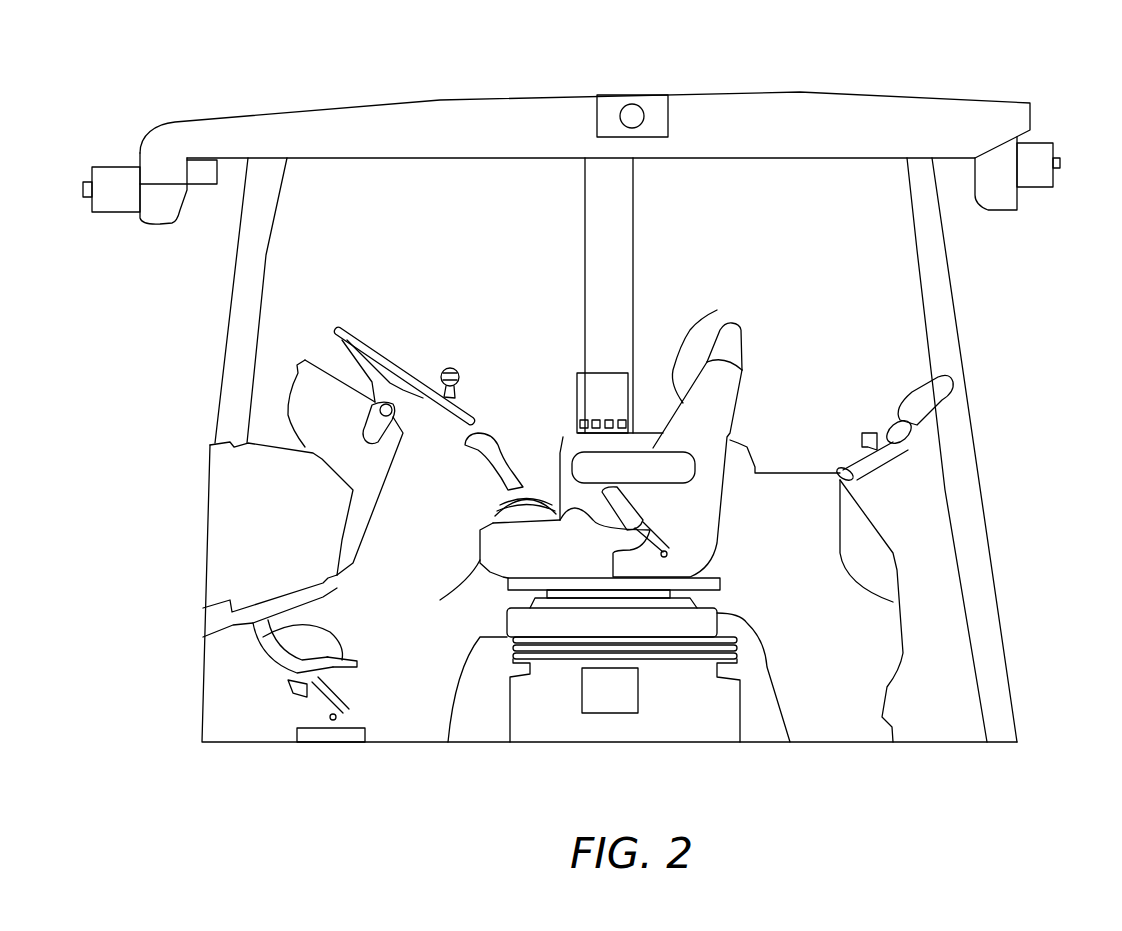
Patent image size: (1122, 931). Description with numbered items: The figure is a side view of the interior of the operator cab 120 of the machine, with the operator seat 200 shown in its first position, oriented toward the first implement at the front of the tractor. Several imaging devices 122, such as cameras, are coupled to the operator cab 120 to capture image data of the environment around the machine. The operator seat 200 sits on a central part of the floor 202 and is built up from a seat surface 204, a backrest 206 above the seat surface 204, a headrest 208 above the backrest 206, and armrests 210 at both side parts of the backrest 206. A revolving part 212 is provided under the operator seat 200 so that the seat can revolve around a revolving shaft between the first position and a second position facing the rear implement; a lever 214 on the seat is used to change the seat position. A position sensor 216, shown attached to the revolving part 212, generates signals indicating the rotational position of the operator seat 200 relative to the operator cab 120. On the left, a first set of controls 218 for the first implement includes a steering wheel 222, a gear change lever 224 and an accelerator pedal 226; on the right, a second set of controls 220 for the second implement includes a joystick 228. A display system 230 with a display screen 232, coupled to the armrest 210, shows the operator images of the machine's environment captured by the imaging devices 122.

The operator cab 120 is at (382, 93).
The imaging devices 122 is at (107, 167).
The operator seat 200 is at (660, 335).
The floor 202 is at (813, 742).
The seat surface 204 is at (565, 500).
The backrest 206 is at (683, 403).
The headrest 208 is at (743, 340).
The armrests 210 is at (670, 472).
The revolving part 212 is at (625, 622).
The lever 214 is at (620, 508).
The position sensor 216 is at (610, 690).
The first set of controls 218 is at (415, 338).
The second set of controls 220 is at (895, 385).
The steering wheel 222 is at (353, 330).
The gear change lever 224 is at (478, 447).
The accelerator pedal 226 is at (293, 637).
The joystick 228 is at (937, 387).
The display system 230 is at (568, 358).
The display screen 232 is at (600, 383).